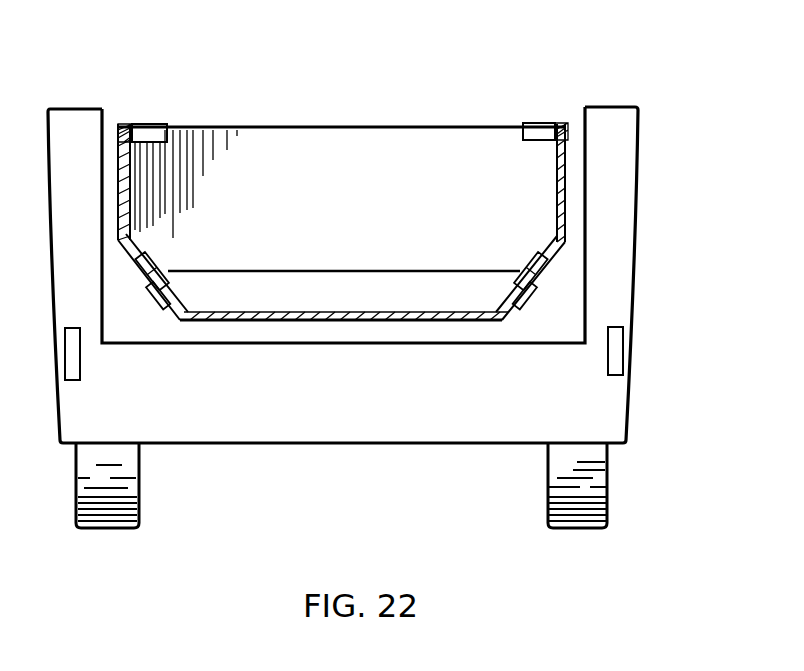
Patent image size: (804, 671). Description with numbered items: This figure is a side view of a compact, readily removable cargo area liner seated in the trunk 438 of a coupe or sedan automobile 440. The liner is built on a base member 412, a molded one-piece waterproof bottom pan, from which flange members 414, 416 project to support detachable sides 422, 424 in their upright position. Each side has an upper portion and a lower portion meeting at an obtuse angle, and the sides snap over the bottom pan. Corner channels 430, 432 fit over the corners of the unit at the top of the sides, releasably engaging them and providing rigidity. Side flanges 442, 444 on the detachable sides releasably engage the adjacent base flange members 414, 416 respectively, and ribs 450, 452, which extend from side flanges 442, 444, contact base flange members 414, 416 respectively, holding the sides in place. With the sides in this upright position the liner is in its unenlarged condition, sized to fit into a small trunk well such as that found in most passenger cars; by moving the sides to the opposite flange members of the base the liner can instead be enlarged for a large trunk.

The base member 412 is at (490, 321).
The flange member 414 is at (522, 294).
The flange member 416 is at (168, 302).
The detachable side 422 is at (565, 193).
The detachable side 424 is at (120, 187).
The corner channel 430 is at (537, 123).
The corner channel 432 is at (143, 124).
The trunk 438 is at (603, 256).
The automobile 440 is at (622, 394).
The side flange 442 is at (523, 230).
The side flange 444 is at (160, 263).
The rib 450 is at (520, 285).
The rib 452 is at (167, 297).